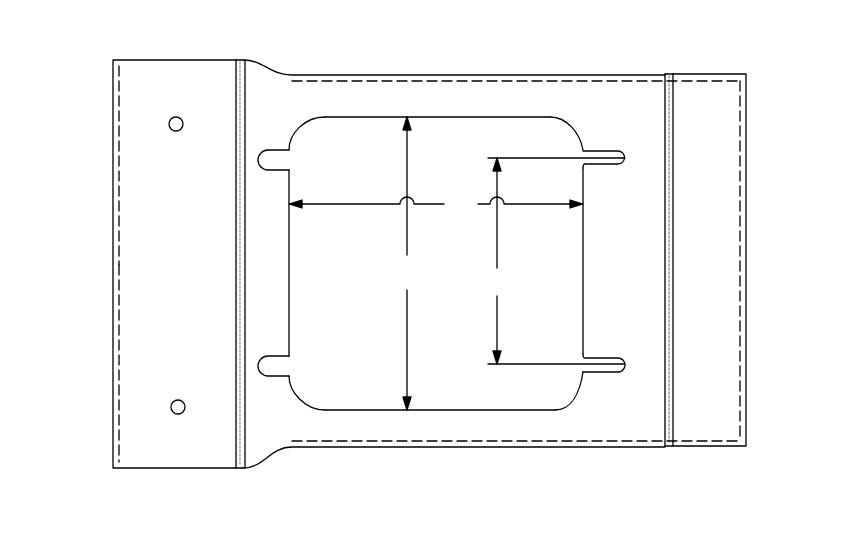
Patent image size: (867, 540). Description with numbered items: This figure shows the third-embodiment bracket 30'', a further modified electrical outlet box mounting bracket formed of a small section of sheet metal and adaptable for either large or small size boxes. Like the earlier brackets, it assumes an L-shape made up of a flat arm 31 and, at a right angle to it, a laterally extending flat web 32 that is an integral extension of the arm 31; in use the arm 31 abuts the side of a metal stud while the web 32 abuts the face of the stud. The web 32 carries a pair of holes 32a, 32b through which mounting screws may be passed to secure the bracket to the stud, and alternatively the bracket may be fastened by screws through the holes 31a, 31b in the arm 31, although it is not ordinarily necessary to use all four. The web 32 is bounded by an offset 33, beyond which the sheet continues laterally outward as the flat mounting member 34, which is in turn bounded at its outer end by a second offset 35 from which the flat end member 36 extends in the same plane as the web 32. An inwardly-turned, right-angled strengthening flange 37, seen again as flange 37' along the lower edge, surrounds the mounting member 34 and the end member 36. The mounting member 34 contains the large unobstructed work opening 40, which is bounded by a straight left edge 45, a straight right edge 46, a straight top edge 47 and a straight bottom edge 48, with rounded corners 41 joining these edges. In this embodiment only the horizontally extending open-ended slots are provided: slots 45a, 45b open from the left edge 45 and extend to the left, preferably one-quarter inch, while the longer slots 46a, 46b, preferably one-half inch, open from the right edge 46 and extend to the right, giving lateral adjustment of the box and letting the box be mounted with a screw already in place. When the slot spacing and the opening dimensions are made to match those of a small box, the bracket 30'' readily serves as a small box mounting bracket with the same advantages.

The bracket 30'' is at (426, 274).
The flat arm 31 is at (121, 66).
The hole 31a is at (113, 119).
The hole 31b is at (116, 400).
The flat web 32 is at (180, 72).
The hole 32a is at (183, 110).
The hole 32b is at (191, 394).
The offset 33 is at (240, 100).
The flat mounting member 34 is at (432, 92).
The offset 35 is at (672, 198).
The flat end member 36 is at (722, 220).
The strengthening flange 37 is at (543, 244).
The strengthening flange 37' is at (516, 460).
The opening 40 is at (392, 372).
The rounded corners of opening 41 is at (298, 128).
The straight left edge 45 is at (291, 263).
The slot 45a is at (290, 162).
The slot 45b is at (290, 361).
The straight right edge 46 is at (583, 233).
The slot 46a is at (585, 162).
The slot 46b is at (588, 363).
The straight top edge 47 is at (480, 118).
The straight bottom edge 48 is at (455, 410).